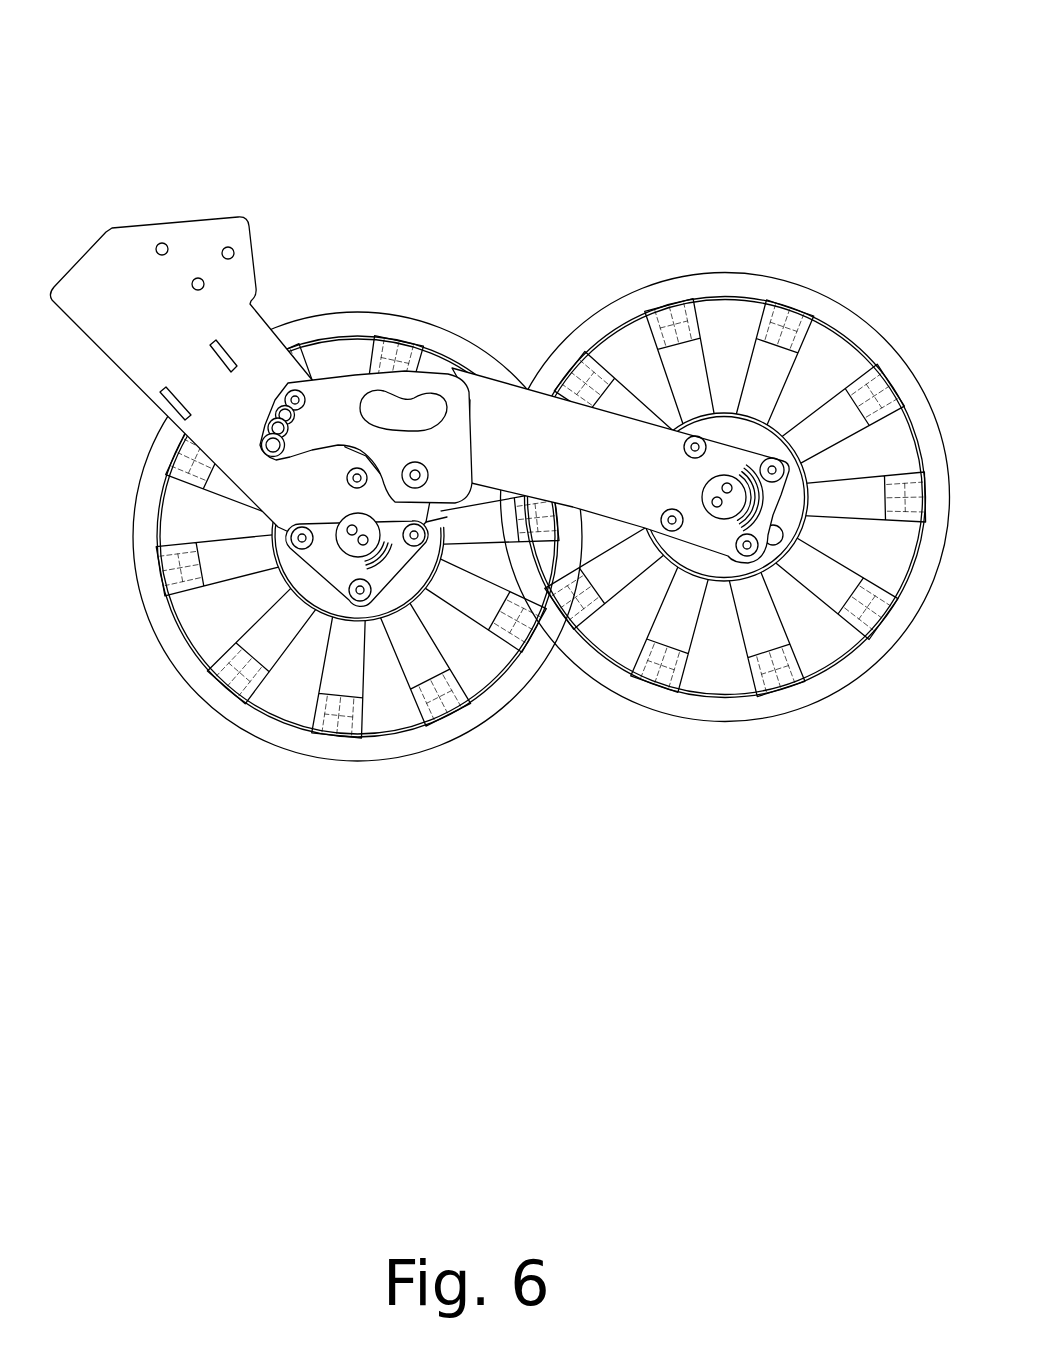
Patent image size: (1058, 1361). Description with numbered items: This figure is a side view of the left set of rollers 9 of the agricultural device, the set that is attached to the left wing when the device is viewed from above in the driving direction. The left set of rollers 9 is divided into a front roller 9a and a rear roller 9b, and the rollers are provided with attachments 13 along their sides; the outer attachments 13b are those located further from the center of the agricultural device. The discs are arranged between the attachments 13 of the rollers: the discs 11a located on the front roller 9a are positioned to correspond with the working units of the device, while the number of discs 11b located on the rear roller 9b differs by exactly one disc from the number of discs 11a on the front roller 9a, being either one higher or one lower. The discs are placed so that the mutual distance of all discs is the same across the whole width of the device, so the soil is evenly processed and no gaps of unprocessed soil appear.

The left set of rollers 9 is at (172, 240).
The front roller 9a is at (317, 590).
The rear roller 9b is at (697, 568).
The discs located on front rollers 11a is at (380, 753).
The discs located on rear rollers 11b is at (672, 290).
The attachments 13 is at (484, 375).
The outer attachments 13b is at (348, 542).